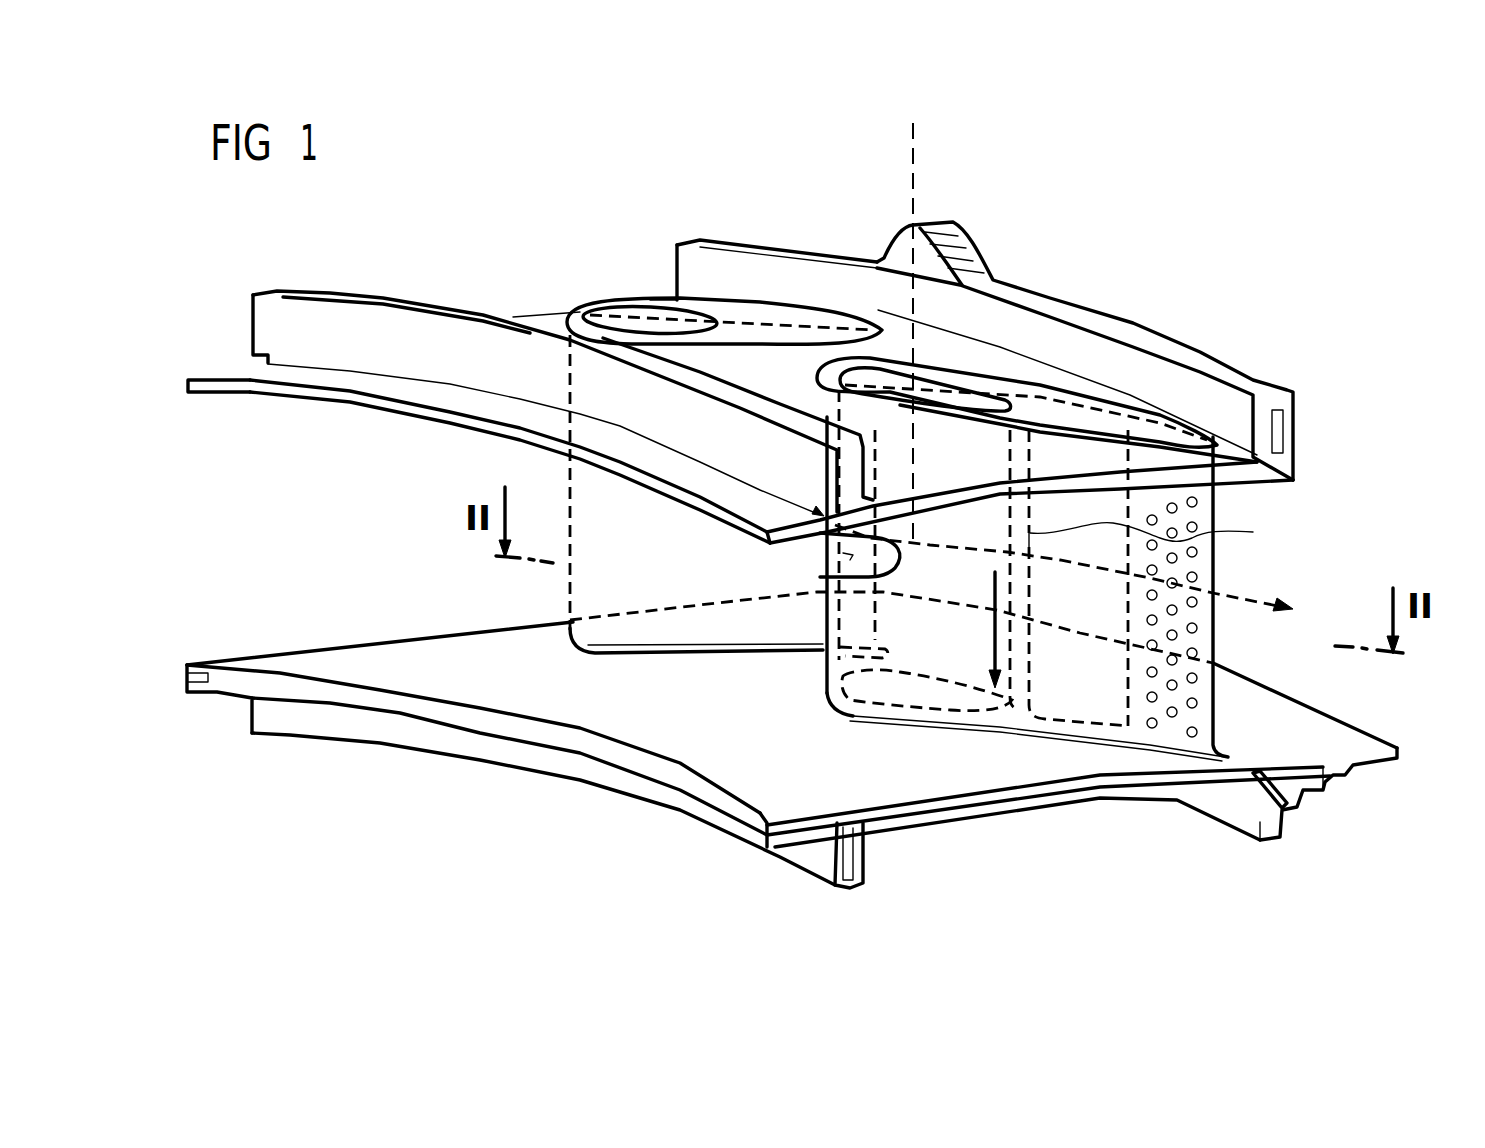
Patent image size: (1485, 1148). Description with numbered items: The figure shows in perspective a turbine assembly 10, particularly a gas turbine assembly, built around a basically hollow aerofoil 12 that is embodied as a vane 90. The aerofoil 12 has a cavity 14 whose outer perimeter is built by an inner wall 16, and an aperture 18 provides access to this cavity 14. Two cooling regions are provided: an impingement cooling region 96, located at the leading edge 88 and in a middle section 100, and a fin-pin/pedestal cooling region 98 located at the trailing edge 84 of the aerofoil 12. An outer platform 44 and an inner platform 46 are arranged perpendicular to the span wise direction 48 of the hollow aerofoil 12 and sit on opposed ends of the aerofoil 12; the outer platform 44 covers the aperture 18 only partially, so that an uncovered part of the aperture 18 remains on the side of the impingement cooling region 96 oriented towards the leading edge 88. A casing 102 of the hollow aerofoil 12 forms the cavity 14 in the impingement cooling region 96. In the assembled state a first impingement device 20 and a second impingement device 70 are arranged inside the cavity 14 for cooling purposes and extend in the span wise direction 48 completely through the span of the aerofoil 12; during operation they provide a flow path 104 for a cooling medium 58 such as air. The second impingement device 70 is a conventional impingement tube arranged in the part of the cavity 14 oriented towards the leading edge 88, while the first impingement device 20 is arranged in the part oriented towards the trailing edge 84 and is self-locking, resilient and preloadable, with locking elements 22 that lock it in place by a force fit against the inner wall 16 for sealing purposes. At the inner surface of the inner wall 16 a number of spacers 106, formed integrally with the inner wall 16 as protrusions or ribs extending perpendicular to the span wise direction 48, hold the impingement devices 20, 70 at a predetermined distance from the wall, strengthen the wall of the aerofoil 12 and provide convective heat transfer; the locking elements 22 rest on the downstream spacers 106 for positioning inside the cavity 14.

The turbine assembly 10 is at (1294, 280).
The aerofoil 12 is at (1142, 720).
The cavity 14 is at (855, 546).
The inner wall 16 is at (895, 615).
The aperture 18 is at (947, 398).
The first impingement device 20 is at (1072, 720).
The locking element 22 is at (1161, 532).
The outer platform 44 is at (258, 382).
The inner platform 46 is at (247, 686).
The span wise direction 48 is at (995, 620).
The cooling medium 58 is at (913, 157).
The second impingement device 70 is at (868, 703).
The trailing edge 84 is at (1213, 618).
The leading edge 88 is at (826, 663).
The vane 90 is at (903, 697).
The impingement cooling region 96 is at (936, 732).
The fin-pin/pedestal cooling region 98 is at (1183, 718).
The middle section 100 is at (1040, 376).
The casing 102 is at (1078, 738).
The flow path 104 is at (1247, 597).
The spacers 106 is at (923, 480).